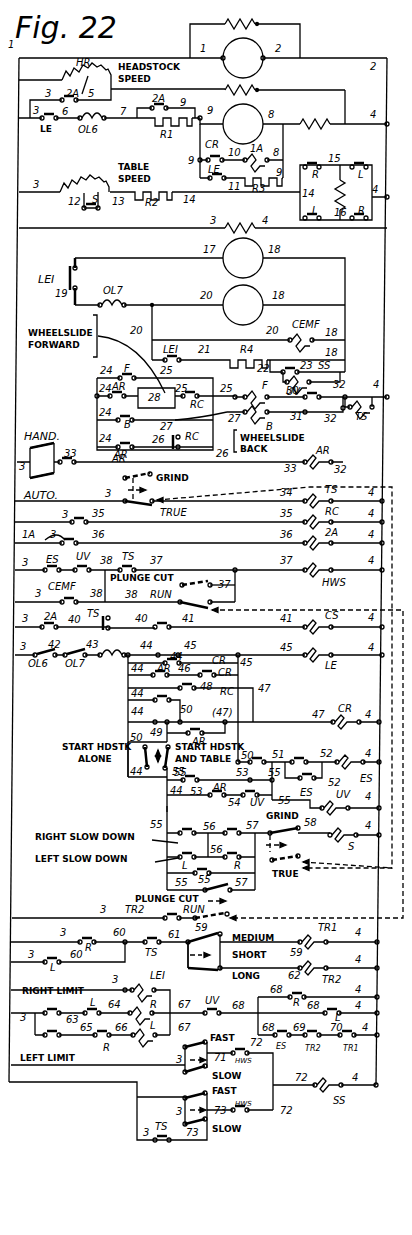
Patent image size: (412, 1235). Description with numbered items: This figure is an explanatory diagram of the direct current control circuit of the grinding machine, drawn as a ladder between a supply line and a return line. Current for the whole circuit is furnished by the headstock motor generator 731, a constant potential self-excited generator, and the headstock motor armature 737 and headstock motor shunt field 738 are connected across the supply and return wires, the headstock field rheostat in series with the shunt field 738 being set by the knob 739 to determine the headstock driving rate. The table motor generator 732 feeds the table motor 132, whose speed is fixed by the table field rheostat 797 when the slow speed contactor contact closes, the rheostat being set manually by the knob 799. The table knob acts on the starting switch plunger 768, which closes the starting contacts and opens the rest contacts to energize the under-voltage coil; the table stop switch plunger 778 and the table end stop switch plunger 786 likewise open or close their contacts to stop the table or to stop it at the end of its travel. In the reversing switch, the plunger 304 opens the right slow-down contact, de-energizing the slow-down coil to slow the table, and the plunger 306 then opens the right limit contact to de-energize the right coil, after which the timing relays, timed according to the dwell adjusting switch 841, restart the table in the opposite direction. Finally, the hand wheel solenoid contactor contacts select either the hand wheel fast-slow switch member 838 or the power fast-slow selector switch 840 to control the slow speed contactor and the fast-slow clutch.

The headstock motor generator 731 is at (245, 48).
The headstock motor armature 737 is at (243, 124).
The headstock motor shunt field 738 is at (262, 94).
The knob 739 is at (76, 74).
The table field rheostat 797 is at (64, 180).
The knob 799 is at (84, 185).
The table motor generator 732 is at (243, 258).
The table motor 132 is at (243, 305).
The switch plunger 778 is at (167, 808).
The plunger 768 is at (265, 760).
The switch plunger 786 is at (301, 760).
The switch plunger 304 is at (118, 934).
The switch plunger 306 is at (142, 915).
The hand wheel fast-slow switch member 838 is at (184, 1047).
The power fast-slow selector switch 840 is at (184, 1096).
The dwell adjusting switch 841 is at (194, 965).